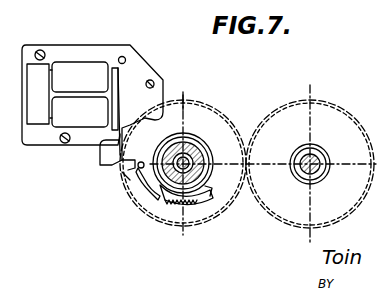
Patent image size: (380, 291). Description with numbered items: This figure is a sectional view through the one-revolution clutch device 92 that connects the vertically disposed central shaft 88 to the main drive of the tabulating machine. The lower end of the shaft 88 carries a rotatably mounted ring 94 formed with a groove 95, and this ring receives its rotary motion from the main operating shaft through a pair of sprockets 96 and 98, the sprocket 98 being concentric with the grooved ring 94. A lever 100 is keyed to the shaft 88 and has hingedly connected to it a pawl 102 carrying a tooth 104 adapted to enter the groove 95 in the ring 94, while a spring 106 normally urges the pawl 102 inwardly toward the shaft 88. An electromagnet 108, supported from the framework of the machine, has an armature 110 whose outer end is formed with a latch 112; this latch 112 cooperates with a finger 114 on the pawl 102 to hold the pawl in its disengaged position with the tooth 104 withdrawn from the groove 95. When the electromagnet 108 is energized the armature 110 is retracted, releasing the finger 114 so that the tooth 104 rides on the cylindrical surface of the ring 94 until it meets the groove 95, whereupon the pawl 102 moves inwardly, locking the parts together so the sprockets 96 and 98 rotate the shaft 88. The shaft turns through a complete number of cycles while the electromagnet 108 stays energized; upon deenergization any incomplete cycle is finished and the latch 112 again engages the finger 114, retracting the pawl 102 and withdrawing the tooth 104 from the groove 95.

The central shaft 88 is at (192, 160).
The one-revolution clutch device 92 is at (115, 208).
The ring 94 is at (207, 143).
The groove 95 is at (205, 192).
The sprocket 96 is at (327, 107).
The sprocket 98 is at (205, 103).
The lever 100 is at (160, 134).
The pawl 102 is at (146, 186).
The tooth 104 is at (165, 200).
The spring 106 is at (172, 215).
The electromagnet 108 is at (79, 94).
The armature 110 is at (128, 55).
The latch 112 is at (126, 180).
The finger 114 is at (138, 160).